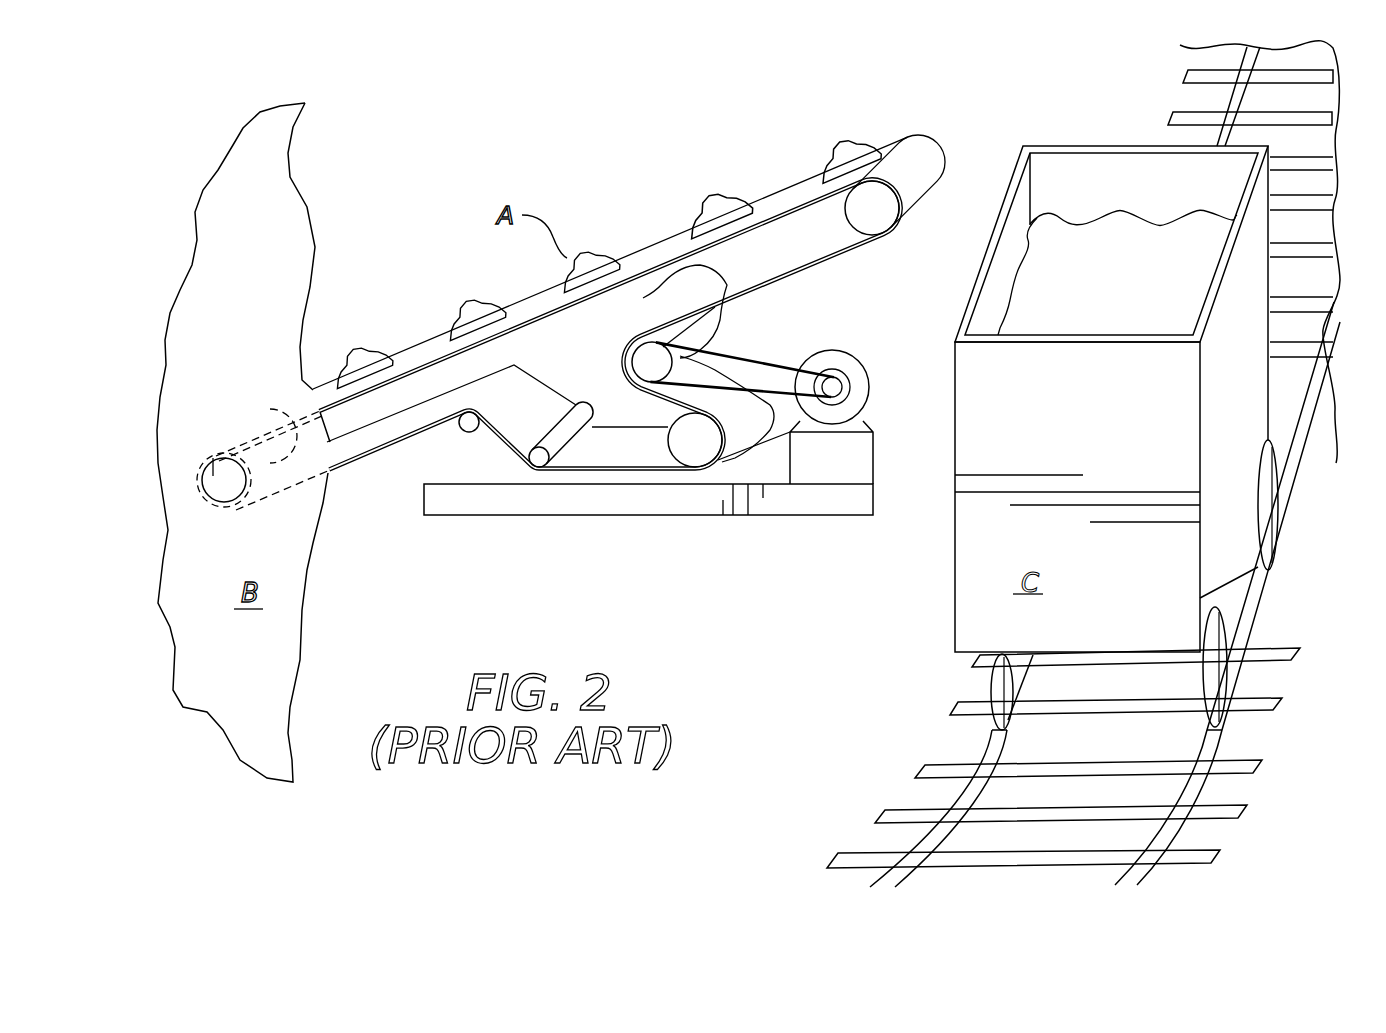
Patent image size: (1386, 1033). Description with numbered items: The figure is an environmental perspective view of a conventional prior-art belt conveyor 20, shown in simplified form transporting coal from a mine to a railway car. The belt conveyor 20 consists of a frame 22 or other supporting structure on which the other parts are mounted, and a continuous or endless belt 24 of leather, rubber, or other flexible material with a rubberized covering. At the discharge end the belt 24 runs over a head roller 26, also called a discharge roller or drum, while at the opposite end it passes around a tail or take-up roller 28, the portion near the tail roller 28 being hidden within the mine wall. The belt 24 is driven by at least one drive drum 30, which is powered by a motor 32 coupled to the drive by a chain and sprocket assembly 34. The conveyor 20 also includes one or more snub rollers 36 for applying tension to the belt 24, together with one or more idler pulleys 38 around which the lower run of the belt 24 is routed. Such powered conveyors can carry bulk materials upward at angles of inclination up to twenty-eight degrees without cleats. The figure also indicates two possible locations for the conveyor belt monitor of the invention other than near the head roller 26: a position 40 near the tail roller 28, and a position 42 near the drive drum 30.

The belt conveyor 20 is at (608, 180).
The frame 22 is at (523, 507).
The belt 24 is at (807, 270).
The head roller 26 is at (877, 220).
The tail roller 28 is at (213, 457).
The drive drum 30 is at (638, 372).
The motor 32 is at (863, 363).
The chain and sprocket assembly 34 is at (760, 362).
The snub roller 36 is at (463, 425).
The idler pulley 38 is at (553, 447).
The position near the tail roller 40 is at (257, 500).
The position near the drive drum 42 is at (667, 311).